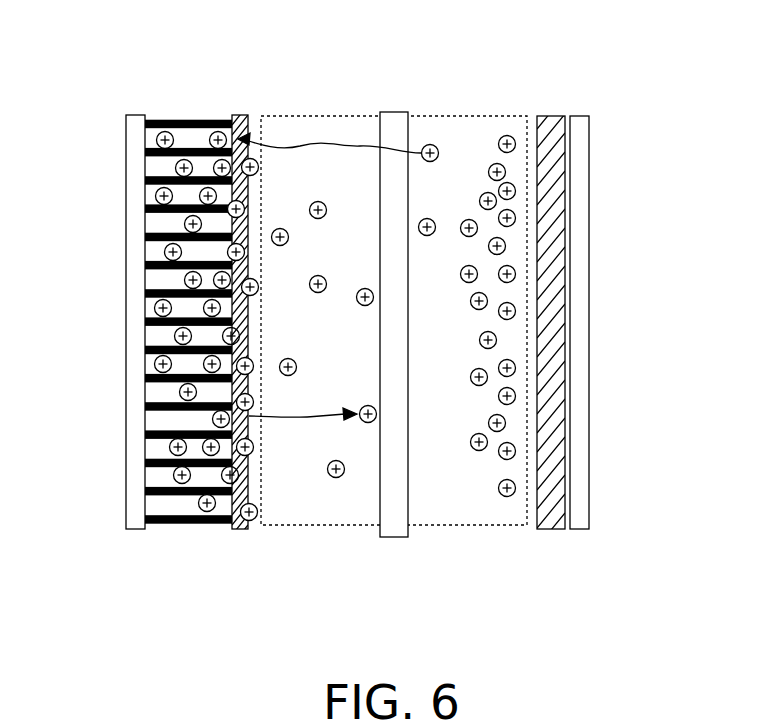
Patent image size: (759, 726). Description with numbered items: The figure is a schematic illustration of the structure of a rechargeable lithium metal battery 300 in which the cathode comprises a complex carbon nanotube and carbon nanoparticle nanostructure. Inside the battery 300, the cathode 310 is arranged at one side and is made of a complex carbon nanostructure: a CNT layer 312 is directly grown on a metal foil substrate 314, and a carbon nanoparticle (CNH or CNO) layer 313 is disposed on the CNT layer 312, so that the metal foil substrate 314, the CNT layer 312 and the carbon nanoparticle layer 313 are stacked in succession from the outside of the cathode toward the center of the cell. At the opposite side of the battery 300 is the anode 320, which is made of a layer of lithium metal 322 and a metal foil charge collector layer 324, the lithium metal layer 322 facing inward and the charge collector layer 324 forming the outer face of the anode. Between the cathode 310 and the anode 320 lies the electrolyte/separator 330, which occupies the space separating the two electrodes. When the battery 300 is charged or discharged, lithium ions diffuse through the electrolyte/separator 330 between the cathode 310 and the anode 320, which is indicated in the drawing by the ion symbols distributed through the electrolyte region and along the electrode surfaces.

The rechargeable lithium metal battery 300 is at (416, 102).
The cathode 310 is at (171, 344).
The CNT layer 312 is at (155, 118).
The carbon nanoparticle (CNH or CNO) layer 313 is at (246, 118).
The metal foil substrate 314 is at (135, 318).
The anode 320 is at (618, 339).
The layer of lithium metal 322 is at (542, 122).
The metal foil charge collector layer 324 is at (574, 270).
The electrolyte/separator 330 is at (377, 368).